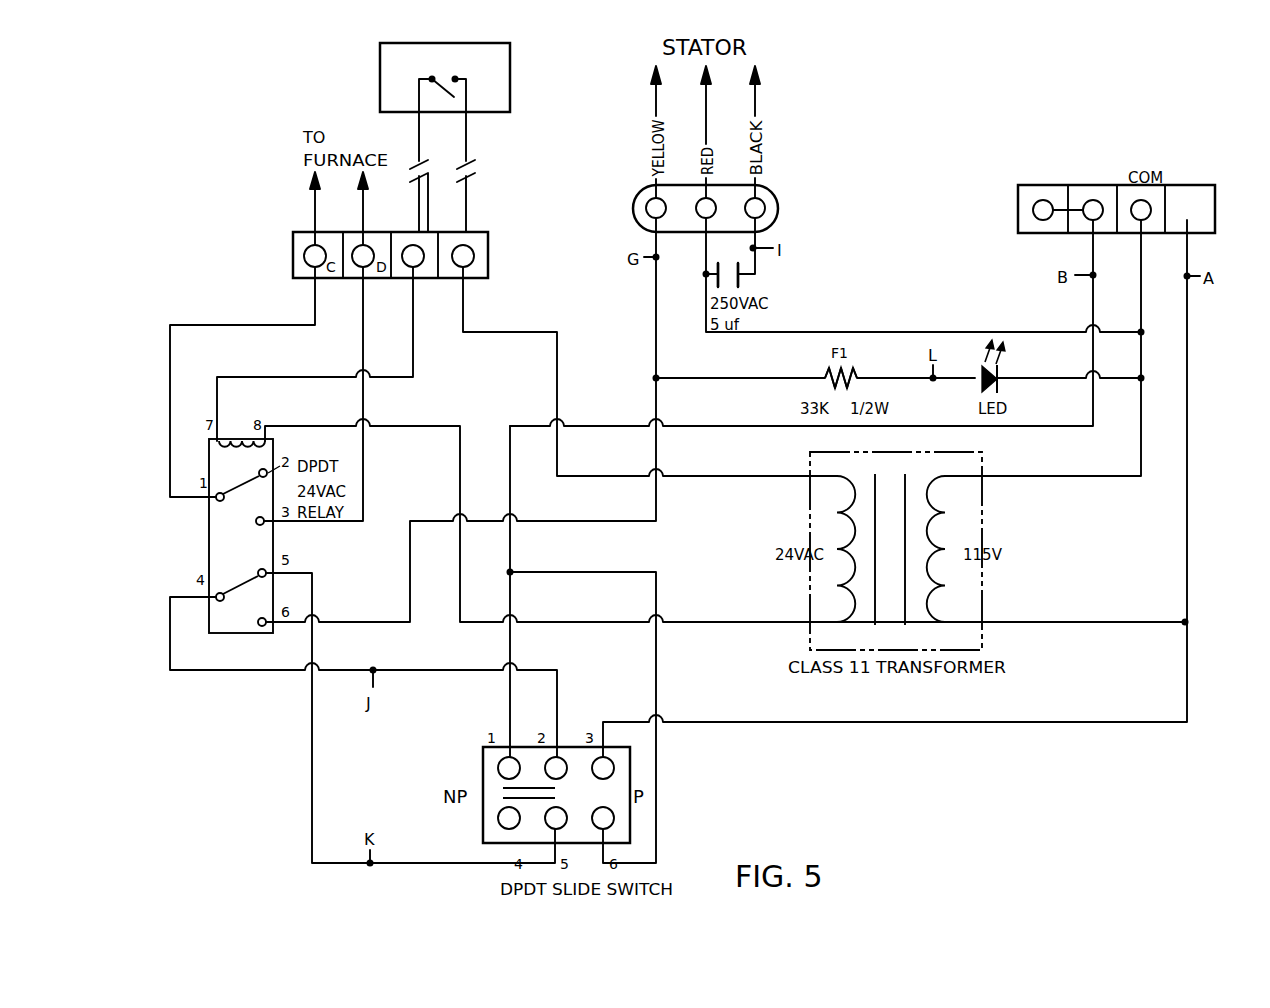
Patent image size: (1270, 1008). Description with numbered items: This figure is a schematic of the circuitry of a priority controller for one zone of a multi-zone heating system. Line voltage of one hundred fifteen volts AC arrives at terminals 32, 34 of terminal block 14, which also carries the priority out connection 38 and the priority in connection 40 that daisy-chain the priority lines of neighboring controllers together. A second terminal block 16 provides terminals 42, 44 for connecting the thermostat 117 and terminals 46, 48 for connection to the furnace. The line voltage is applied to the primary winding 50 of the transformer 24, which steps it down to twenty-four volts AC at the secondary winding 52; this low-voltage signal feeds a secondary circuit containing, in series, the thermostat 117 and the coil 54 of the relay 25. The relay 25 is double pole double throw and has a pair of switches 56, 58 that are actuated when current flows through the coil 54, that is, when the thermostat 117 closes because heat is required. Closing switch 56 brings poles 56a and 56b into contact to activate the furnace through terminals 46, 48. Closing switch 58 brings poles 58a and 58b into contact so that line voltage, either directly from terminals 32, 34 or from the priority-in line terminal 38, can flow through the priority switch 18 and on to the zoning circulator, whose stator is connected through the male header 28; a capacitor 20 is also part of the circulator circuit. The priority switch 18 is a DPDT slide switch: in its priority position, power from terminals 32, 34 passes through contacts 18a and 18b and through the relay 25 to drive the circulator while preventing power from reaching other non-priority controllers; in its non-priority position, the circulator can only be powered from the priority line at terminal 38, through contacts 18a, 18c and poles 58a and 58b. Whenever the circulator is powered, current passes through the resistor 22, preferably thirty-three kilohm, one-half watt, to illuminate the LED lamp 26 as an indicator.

The thermostat 117 is at (503, 63).
The terminal block 16 is at (493, 243).
The terminal 46 is at (293, 265).
The terminal 48 is at (353, 280).
The terminal 44 is at (423, 280).
The terminal 42 is at (480, 280).
The male header 28 is at (772, 200).
The capacitor 20 is at (742, 278).
The terminal block 14 is at (1040, 177).
The terminal 32 is at (1207, 195).
The priority in connection 40 is at (1032, 229).
The priority out connection 38 is at (1098, 226).
The terminal 34 is at (1160, 235).
The resistor 22 is at (853, 368).
The LED lamp 26 is at (1002, 367).
The relay 25 is at (225, 545).
The coil 54 is at (267, 436).
The switch 56 is at (238, 482).
The pole 56a is at (220, 501).
The pole 56b is at (267, 530).
The switch 58 is at (237, 605).
The pole 58a is at (216, 597).
The pole 58b is at (263, 630).
The transformer 24 is at (982, 643).
The secondary winding 52 is at (842, 613).
The primary winding 50 is at (933, 612).
The priority switch 18 is at (485, 757).
The contact 18a is at (565, 771).
The contact 18b is at (617, 765).
The contact 18c is at (503, 777).